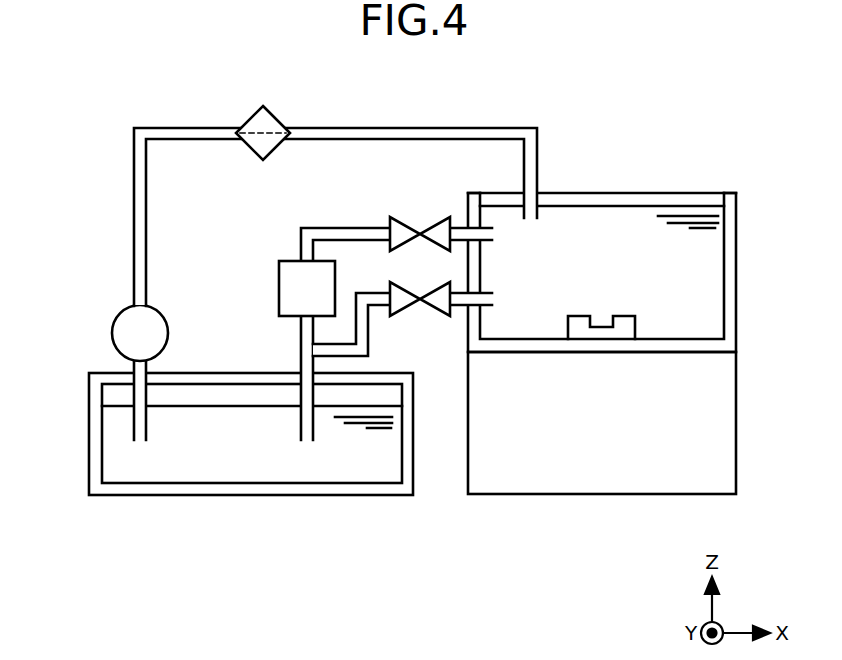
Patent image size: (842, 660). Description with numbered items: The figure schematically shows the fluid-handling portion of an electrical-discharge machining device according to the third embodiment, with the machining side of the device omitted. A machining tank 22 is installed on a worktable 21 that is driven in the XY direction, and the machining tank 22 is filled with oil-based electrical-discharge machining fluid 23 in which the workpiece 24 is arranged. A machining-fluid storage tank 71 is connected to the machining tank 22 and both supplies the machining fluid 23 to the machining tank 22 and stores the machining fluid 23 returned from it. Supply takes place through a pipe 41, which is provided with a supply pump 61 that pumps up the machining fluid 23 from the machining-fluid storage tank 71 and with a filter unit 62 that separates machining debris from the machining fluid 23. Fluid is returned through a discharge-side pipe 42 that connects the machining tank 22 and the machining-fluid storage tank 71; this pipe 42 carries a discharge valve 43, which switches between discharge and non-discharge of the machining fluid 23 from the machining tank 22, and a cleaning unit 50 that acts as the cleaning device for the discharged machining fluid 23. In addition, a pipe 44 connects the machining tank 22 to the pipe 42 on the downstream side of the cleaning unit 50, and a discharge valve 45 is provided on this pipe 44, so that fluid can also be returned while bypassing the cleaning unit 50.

The worktable 21 is at (568, 497).
The machining tank 22 is at (738, 317).
The machining fluid 23 is at (712, 282).
The workpiece 24 is at (637, 328).
The pipe 41 is at (393, 128).
The pipe 42 is at (343, 228).
The discharge valve 43 is at (412, 217).
The pipe 44 is at (368, 330).
The discharge valve 45 is at (437, 316).
The cleaning unit 50 is at (279, 288).
The supply pump 61 is at (112, 331).
The filter unit 62 is at (243, 125).
The machining-fluid storage tank 71 is at (89, 465).